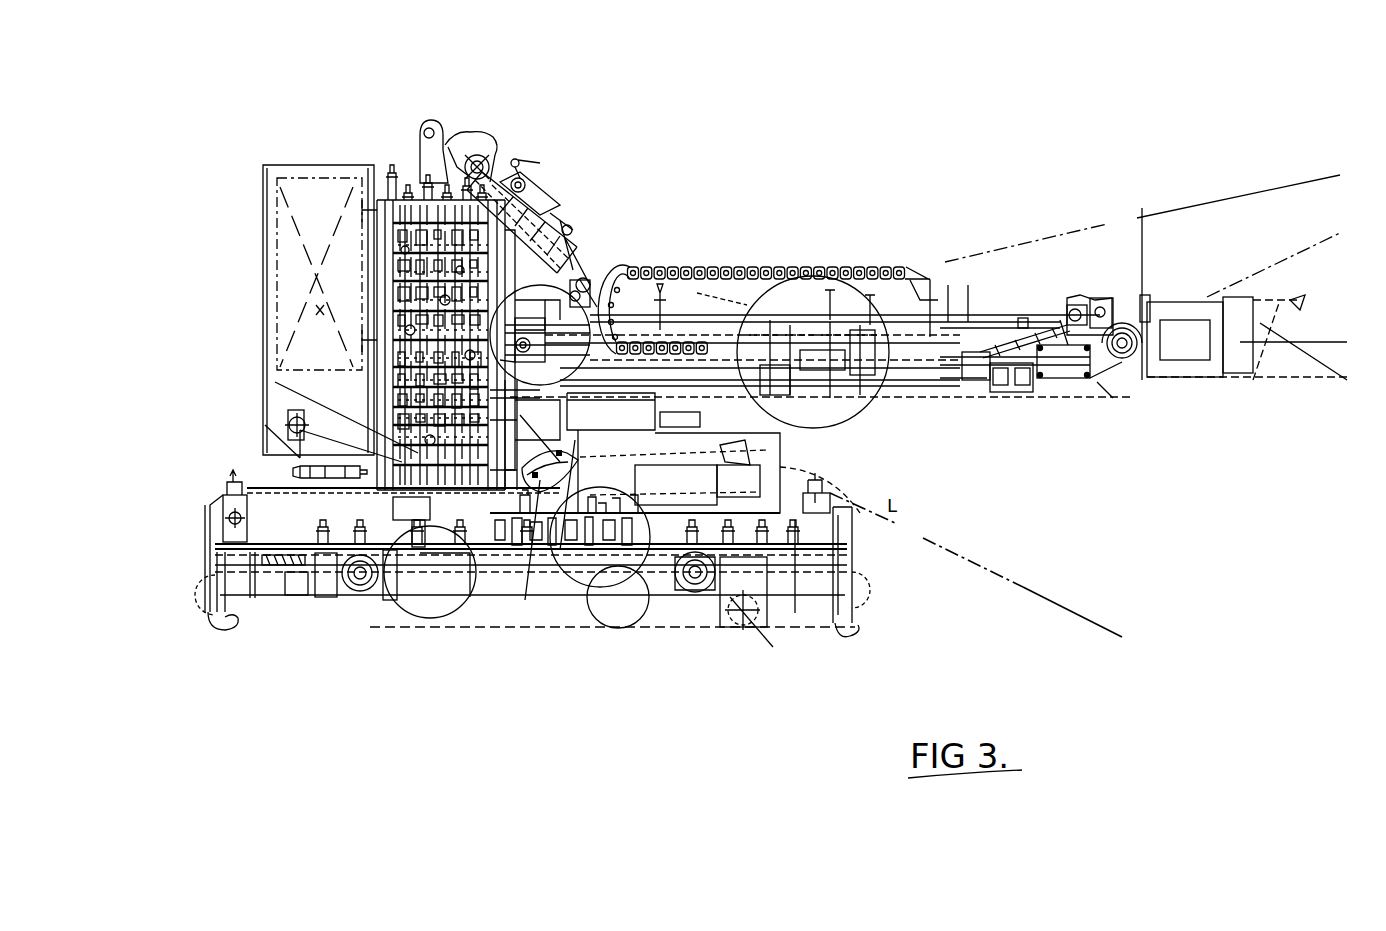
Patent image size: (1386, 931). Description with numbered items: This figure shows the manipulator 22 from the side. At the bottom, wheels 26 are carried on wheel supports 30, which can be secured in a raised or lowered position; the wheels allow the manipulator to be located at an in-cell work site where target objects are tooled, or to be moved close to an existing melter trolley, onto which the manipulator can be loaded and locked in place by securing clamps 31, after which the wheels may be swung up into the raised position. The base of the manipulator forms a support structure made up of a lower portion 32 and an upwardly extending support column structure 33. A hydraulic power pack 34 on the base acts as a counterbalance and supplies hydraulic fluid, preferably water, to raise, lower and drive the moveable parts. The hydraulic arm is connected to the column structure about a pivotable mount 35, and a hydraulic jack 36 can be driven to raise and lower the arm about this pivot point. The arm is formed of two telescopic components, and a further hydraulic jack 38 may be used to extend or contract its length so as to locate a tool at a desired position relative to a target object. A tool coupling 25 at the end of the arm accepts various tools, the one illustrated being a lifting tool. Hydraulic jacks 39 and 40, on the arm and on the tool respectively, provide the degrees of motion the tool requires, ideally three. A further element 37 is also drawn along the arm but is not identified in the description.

The manipulator 22 is at (818, 70).
The tool coupling 25 is at (1122, 362).
The wheels 26 is at (625, 613).
The wheel supports 30 is at (633, 600).
The securing clamps 31 is at (225, 617).
The lower portion 32 is at (185, 469).
The support column structure 33 is at (380, 118).
The hydraulic power pack 34 is at (260, 218).
The pivotable mount 35 is at (570, 295).
The hydraulic jack 36 is at (528, 160).
The cable chain 37 is at (735, 268).
The hydraulic jack 38 is at (967, 317).
The hydraulic jack 39 is at (1058, 310).
The hydraulic jack 40 is at (1207, 297).